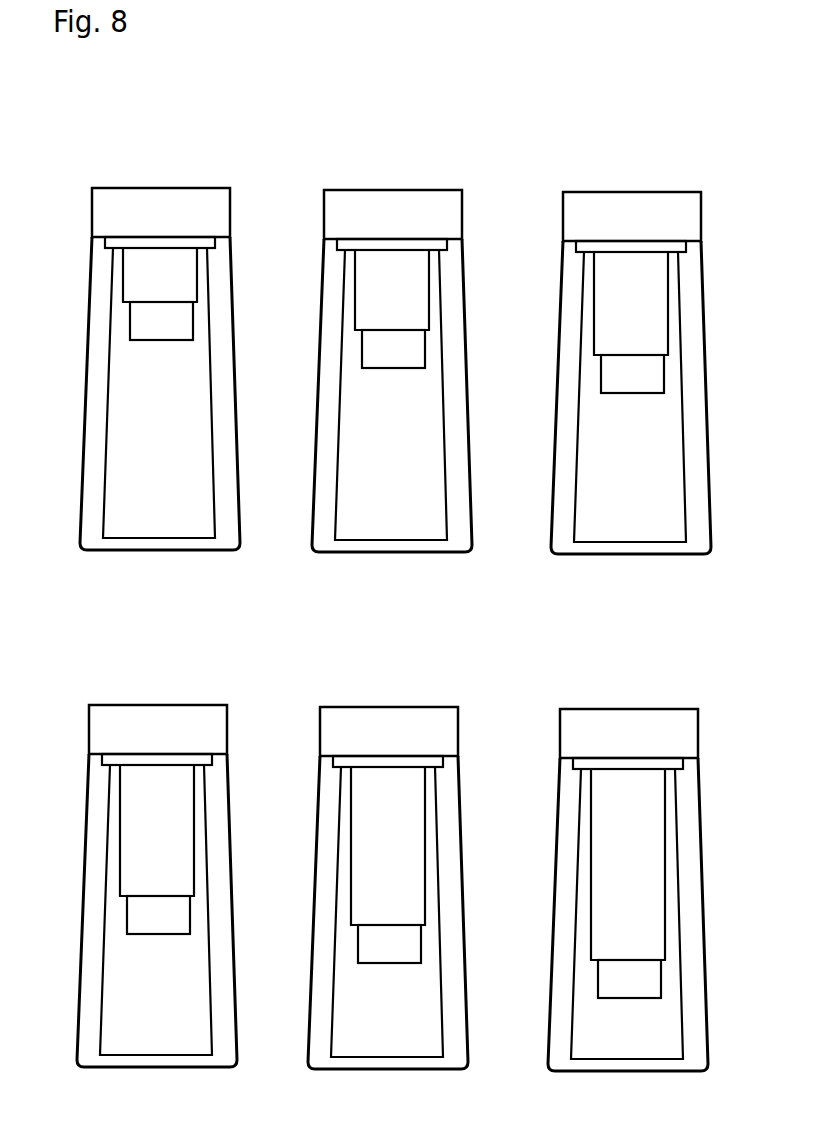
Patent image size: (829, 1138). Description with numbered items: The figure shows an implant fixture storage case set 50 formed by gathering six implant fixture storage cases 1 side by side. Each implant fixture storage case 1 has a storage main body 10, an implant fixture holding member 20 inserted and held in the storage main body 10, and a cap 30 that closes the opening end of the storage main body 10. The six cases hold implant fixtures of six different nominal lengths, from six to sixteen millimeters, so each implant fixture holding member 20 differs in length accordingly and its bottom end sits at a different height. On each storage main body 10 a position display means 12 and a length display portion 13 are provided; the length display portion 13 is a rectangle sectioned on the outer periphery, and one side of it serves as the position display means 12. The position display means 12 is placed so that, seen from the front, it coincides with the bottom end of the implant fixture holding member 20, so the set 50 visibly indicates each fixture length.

The implant fixture storage case 1 is at (150, 131).
The storage main body 10 is at (79, 383).
The position display means 12 is at (175, 300).
The length display portion 13 is at (138, 320).
The implant fixture holding member 20 is at (133, 278).
The cap 30 is at (117, 195).
The implant fixture storage case set 50 is at (410, 44).